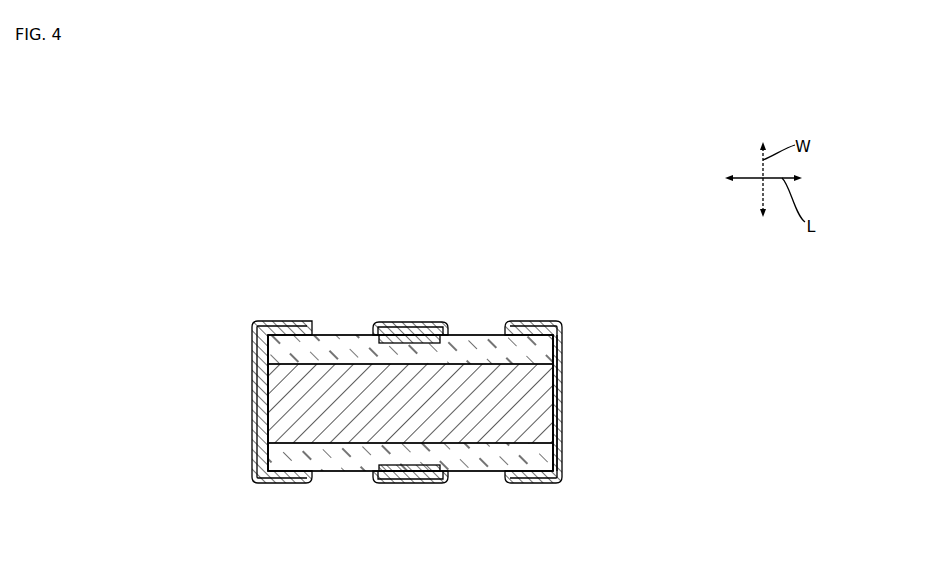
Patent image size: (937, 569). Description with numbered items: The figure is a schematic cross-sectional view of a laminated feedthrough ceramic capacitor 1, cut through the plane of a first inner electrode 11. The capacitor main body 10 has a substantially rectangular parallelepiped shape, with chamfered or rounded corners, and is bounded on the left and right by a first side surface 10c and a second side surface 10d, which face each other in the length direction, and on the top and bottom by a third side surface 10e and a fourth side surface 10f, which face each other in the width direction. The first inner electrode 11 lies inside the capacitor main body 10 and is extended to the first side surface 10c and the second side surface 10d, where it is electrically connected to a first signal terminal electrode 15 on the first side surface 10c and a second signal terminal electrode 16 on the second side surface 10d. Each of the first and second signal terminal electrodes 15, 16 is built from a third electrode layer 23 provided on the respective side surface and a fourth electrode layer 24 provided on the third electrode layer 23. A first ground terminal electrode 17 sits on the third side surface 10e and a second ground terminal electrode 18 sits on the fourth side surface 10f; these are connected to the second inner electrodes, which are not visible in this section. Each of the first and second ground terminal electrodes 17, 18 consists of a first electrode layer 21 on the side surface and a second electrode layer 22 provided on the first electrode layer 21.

The laminated feedthrough ceramic capacitor 1 is at (588, 294).
The capacitor main body 10 is at (483, 334).
The first side surface 10c is at (268, 448).
The second side surface 10d is at (560, 448).
The third side surface 10e is at (329, 334).
The fourth side surface 10f is at (335, 472).
The first inner electrode 11 is at (472, 443).
The first signal terminal electrode 15 is at (248, 397).
The second signal terminal electrode 16 is at (570, 363).
The first ground terminal electrode 17 is at (407, 314).
The second ground terminal electrode 18 is at (412, 491).
The first electrode layer 21 is at (415, 331).
The second electrode layer 22 is at (430, 330).
The third electrode layer 23 is at (560, 387).
The fourth electrode layer 24 is at (560, 412).